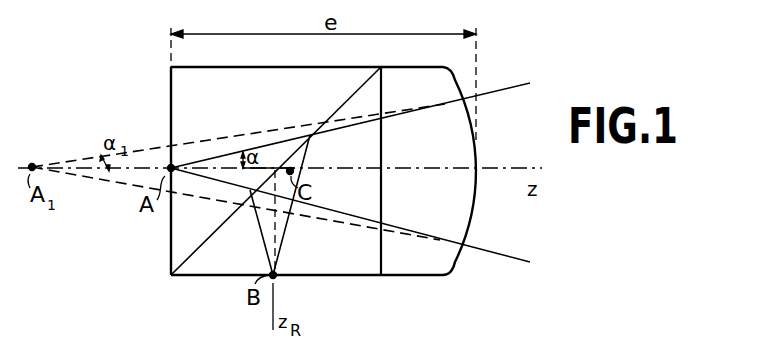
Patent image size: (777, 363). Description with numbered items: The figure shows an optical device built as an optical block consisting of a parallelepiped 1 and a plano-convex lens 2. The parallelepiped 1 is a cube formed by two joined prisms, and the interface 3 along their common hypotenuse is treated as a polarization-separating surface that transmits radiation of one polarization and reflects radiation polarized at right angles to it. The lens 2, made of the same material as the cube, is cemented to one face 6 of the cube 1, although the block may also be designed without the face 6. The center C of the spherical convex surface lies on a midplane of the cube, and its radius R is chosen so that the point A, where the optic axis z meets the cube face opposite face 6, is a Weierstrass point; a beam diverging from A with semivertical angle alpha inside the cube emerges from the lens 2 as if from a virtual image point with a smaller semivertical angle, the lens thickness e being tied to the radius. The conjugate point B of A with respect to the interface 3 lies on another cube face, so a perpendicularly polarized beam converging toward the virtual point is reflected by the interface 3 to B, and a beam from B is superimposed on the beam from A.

The parallelepiped 1 is at (213, 257).
The plano-convex lens 2 is at (413, 258).
The interface 3 is at (195, 250).
The face 6 is at (378, 258).